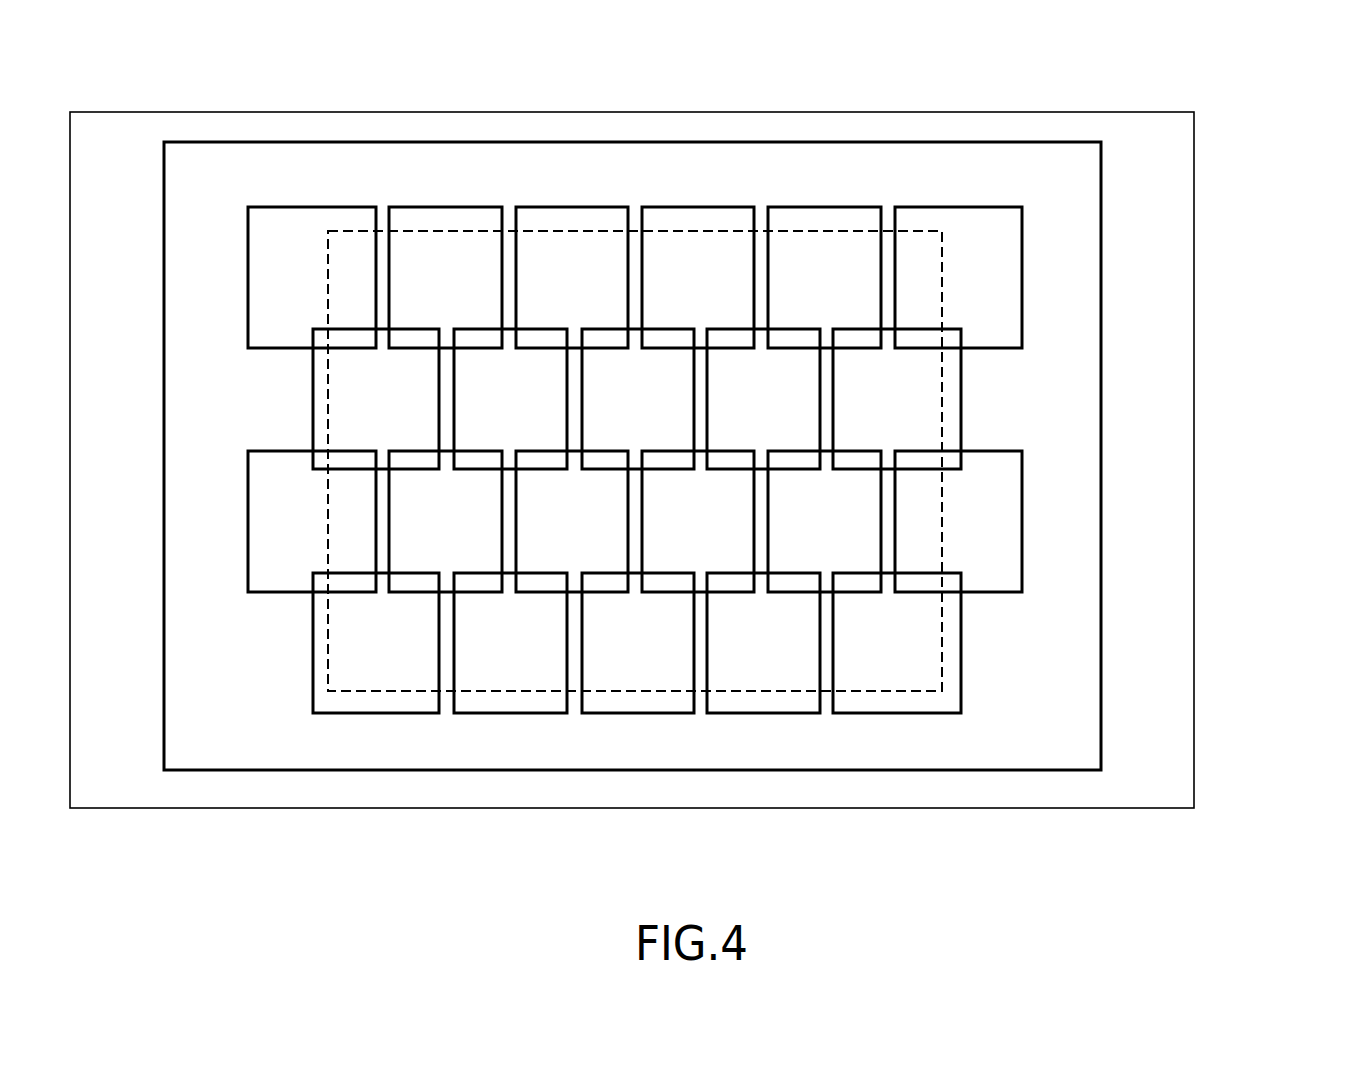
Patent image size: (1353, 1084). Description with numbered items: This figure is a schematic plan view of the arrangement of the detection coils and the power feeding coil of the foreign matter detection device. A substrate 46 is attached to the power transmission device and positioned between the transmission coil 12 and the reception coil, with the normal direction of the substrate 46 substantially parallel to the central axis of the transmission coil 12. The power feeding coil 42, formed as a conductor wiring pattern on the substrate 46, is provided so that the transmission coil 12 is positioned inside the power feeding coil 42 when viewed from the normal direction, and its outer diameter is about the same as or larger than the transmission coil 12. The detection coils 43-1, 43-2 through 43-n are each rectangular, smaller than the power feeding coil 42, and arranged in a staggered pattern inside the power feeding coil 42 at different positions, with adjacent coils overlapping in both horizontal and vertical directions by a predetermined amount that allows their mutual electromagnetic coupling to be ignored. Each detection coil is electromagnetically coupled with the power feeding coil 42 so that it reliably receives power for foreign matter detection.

The transmission coil 12 is at (943, 278).
The power feeding coil 42 is at (1043, 140).
The detection coil 43-1 is at (303, 207).
The detection coil 43-2 is at (435, 207).
The detection coil 43-n is at (904, 716).
The substrate 46 is at (1194, 625).